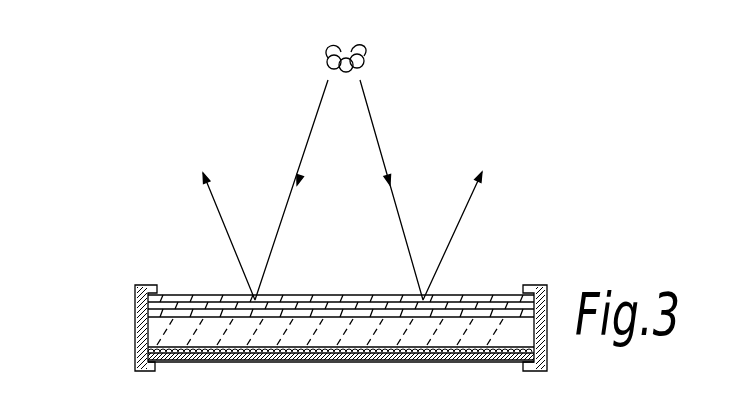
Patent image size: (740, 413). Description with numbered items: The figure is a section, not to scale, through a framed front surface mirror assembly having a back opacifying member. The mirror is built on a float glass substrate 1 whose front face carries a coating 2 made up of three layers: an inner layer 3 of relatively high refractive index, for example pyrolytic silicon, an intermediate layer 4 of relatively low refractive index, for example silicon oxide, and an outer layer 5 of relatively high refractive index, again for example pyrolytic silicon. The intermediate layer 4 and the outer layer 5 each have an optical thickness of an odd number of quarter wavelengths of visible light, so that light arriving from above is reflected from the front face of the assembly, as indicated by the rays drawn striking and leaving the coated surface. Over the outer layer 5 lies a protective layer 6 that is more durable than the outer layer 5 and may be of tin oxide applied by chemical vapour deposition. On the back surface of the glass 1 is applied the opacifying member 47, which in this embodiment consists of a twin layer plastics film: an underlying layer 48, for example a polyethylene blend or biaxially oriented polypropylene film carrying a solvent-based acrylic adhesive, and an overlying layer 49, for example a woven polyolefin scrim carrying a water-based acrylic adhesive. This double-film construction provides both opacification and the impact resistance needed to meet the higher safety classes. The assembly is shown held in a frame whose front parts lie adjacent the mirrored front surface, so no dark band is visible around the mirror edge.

The float glass substrate 1 is at (200, 340).
The coating 2 is at (122, 300).
The inner layer 3 is at (298, 313).
The intermediate layer 4 is at (325, 306).
The outer layer 5 is at (360, 300).
The protective layer 6 is at (508, 295).
The opacifying member 47 is at (433, 357).
The underlying layer 48 is at (137, 351).
The overlying layer 49 is at (137, 356).